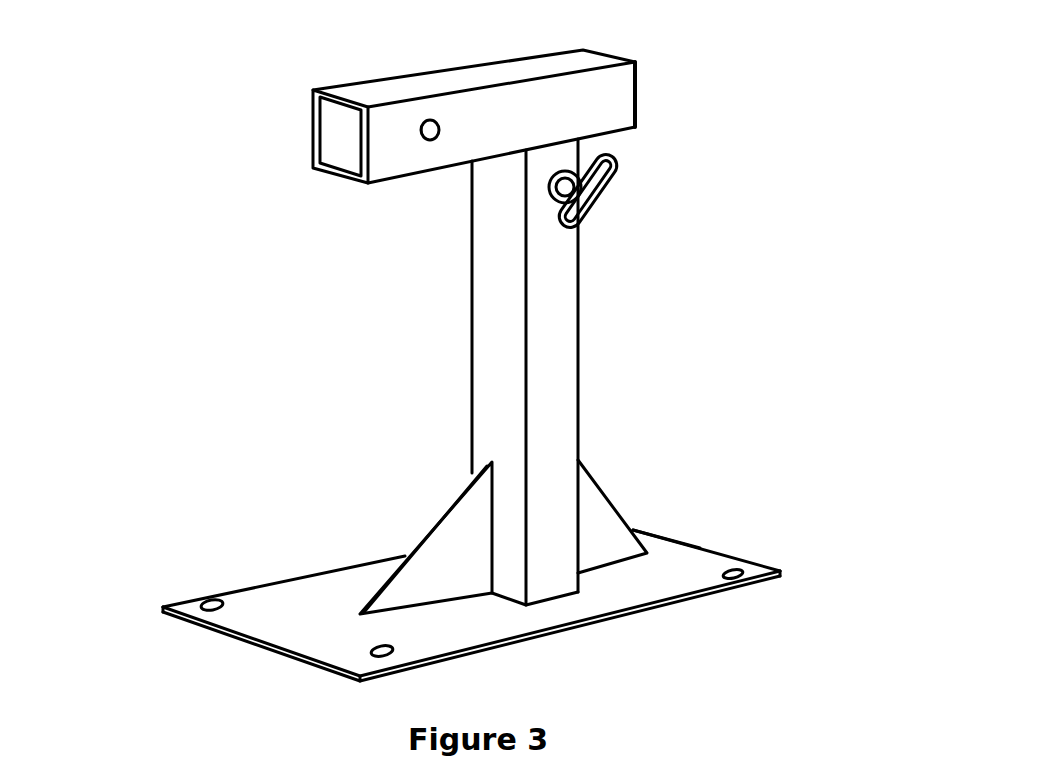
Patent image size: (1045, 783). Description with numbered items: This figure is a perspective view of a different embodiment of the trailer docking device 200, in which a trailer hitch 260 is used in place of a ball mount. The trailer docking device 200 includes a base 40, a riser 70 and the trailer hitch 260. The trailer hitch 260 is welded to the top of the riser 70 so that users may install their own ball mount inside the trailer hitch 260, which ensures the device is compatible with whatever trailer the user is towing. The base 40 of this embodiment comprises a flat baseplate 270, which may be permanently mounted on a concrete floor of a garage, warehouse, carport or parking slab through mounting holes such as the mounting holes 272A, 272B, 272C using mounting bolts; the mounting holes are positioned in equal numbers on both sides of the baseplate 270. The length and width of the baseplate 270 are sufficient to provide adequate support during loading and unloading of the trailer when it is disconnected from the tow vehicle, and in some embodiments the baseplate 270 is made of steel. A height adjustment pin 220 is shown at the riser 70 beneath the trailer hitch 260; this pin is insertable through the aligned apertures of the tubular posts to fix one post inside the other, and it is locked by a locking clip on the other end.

The trailer docking device 200 is at (224, 430).
The trailer hitch 260 is at (635, 93).
The height adjustment pin 220 is at (612, 187).
The riser 70 is at (580, 350).
The baseplate 270 is at (640, 530).
The mounting hole 272A is at (780, 572).
The mounting hole 272B is at (370, 655).
The mounting hole 272C is at (168, 608).
The base 40 is at (505, 650).